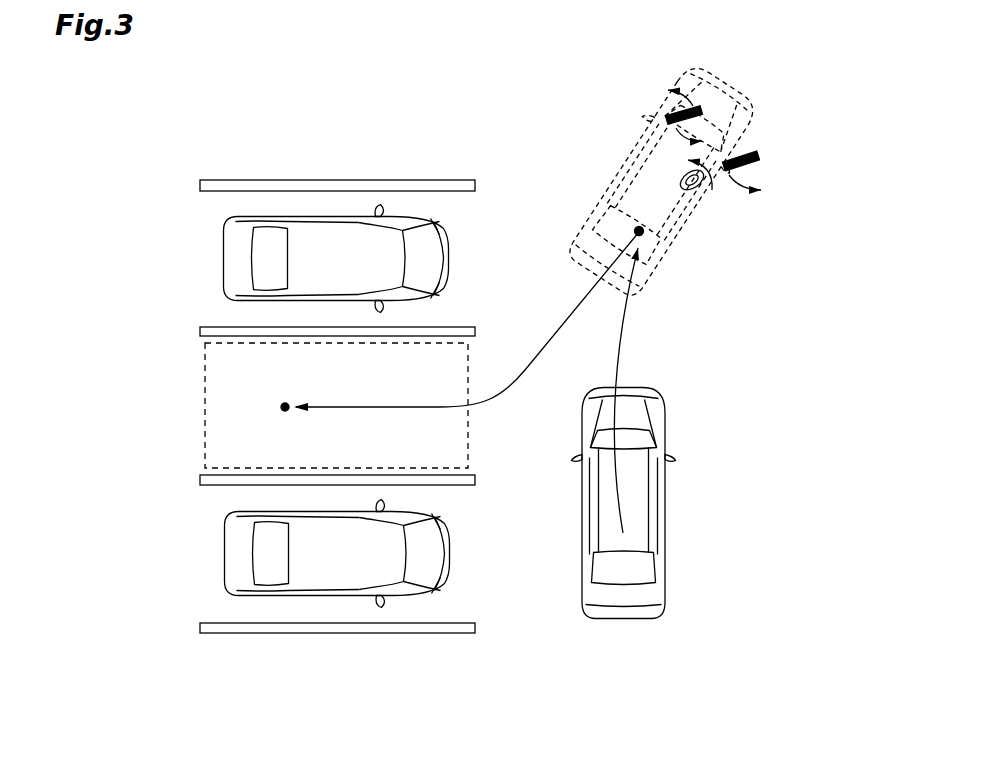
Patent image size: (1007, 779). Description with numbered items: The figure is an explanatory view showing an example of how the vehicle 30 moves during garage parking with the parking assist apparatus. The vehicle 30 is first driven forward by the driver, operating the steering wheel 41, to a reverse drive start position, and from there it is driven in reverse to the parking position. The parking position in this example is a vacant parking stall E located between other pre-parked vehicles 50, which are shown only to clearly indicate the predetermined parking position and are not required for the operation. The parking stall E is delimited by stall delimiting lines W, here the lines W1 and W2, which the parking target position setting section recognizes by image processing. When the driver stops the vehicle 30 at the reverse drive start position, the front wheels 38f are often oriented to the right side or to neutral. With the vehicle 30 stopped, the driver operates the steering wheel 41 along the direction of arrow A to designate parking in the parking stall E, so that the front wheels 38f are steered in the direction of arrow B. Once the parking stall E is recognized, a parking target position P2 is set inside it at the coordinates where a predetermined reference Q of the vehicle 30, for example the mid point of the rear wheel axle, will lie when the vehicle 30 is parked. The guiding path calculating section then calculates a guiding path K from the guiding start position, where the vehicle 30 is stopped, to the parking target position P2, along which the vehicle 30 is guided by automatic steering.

The vehicle 30 is at (660, 518).
The front wheels 38f is at (667, 120).
The steering wheel 41 is at (698, 190).
The other vehicles 50 is at (223, 255).
The stall delimiting lines W is at (345, 180).
The stall delimiting line W1 is at (237, 485).
The stall delimiting line W2 is at (447, 327).
The parking stall E is at (203, 405).
The guiding path K is at (517, 380).
The parking target position P2 is at (277, 408).
The reference Q is at (636, 228).
The arrow A is at (689, 168).
The arrow B is at (704, 135).